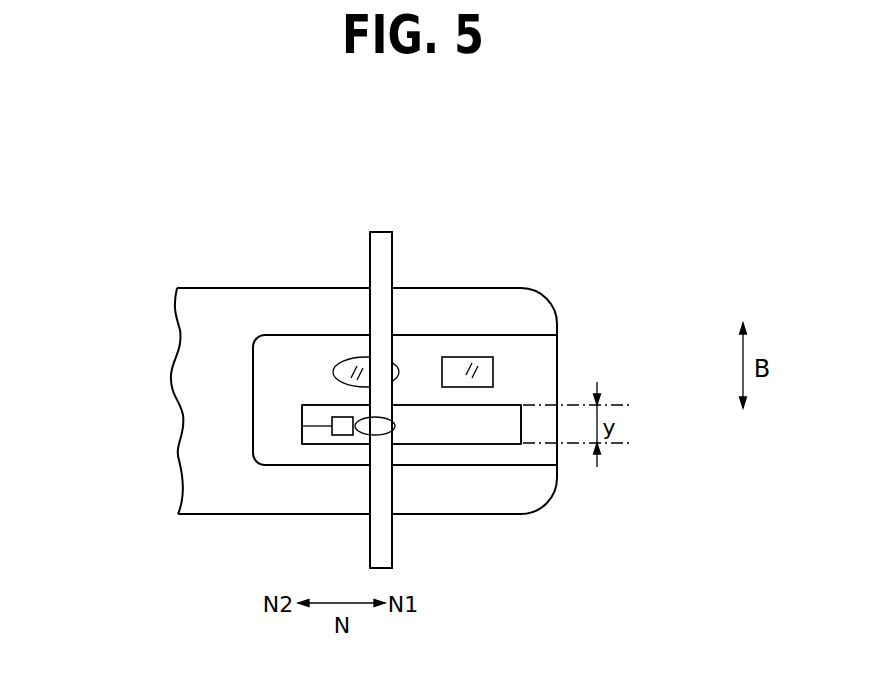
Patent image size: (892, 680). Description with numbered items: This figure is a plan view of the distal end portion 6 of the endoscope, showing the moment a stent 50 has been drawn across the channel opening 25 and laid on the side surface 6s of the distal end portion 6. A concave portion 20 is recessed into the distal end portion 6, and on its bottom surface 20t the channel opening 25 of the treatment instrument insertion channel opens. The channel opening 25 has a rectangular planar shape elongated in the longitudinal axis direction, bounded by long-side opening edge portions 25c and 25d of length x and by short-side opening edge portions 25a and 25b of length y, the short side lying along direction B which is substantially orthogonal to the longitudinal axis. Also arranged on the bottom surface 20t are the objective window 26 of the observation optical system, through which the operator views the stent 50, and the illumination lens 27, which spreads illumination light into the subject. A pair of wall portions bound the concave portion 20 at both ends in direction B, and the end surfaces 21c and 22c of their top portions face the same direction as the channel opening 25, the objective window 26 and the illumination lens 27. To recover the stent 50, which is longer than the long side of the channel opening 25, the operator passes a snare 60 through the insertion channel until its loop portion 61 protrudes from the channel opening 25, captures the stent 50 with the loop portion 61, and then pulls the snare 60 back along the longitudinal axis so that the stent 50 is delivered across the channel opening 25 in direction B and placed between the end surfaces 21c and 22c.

The distal end portion 6 is at (218, 317).
The side surface of housing 6s is at (562, 358).
The concave portion 20 is at (461, 344).
The bottom surface 20t is at (296, 378).
The end surface 21c is at (447, 483).
The end surface 22c is at (423, 317).
The channel opening 25 is at (484, 427).
The opening edge portion 25a is at (521, 427).
The opening edge portion 25b is at (302, 417).
The opening edge portion 25c is at (330, 446).
The opening edge portion 25d is at (400, 405).
The objective window 26 is at (342, 360).
The illumination lens 27 is at (487, 367).
The stent 50 is at (380, 250).
The snare 60 is at (310, 427).
The loop portion 61 is at (373, 412).